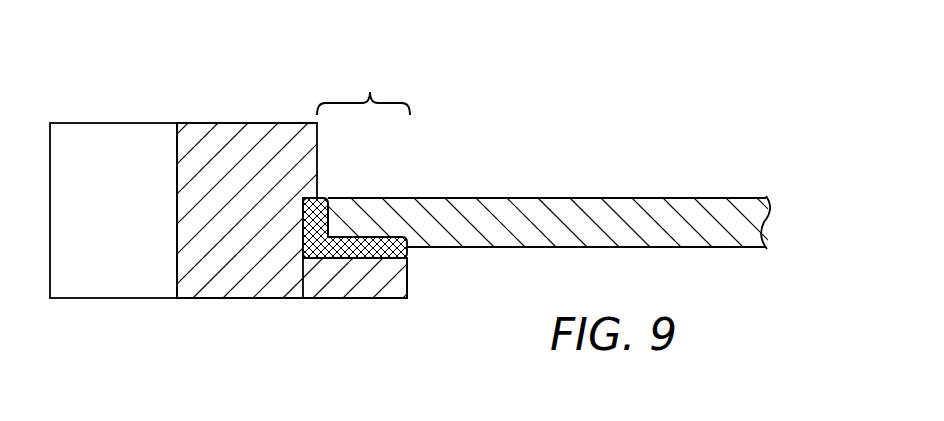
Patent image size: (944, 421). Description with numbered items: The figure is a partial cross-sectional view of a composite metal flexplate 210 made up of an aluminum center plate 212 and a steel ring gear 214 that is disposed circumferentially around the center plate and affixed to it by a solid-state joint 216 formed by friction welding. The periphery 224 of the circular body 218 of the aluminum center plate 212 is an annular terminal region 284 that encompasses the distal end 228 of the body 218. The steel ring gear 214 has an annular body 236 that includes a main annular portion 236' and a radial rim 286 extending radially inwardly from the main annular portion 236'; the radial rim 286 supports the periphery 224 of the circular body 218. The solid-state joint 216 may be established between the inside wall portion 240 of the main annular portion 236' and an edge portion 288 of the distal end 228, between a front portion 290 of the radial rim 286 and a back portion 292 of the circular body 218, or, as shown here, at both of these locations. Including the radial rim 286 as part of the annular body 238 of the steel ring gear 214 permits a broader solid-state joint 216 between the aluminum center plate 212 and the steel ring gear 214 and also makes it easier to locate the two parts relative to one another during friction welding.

The composite metal flexplate 210 is at (732, 82).
The aluminum center plate 212 is at (550, 110).
The steel ring gear 214 is at (175, 102).
The solid-state joint 216 is at (328, 272).
The circular body 218 is at (618, 207).
The periphery 224 is at (408, 161).
The distal end 228 is at (350, 210).
The annular body 236 is at (295, 173).
The main annular portion 236' is at (240, 292).
The annular body 238 is at (108, 135).
The inside wall portion 240 is at (300, 225).
The annular terminal region 284 is at (353, 213).
The radial rim 286 is at (360, 284).
The edge portion 288 is at (333, 222).
The front portion 290 is at (368, 265).
The back portion 292 is at (370, 225).